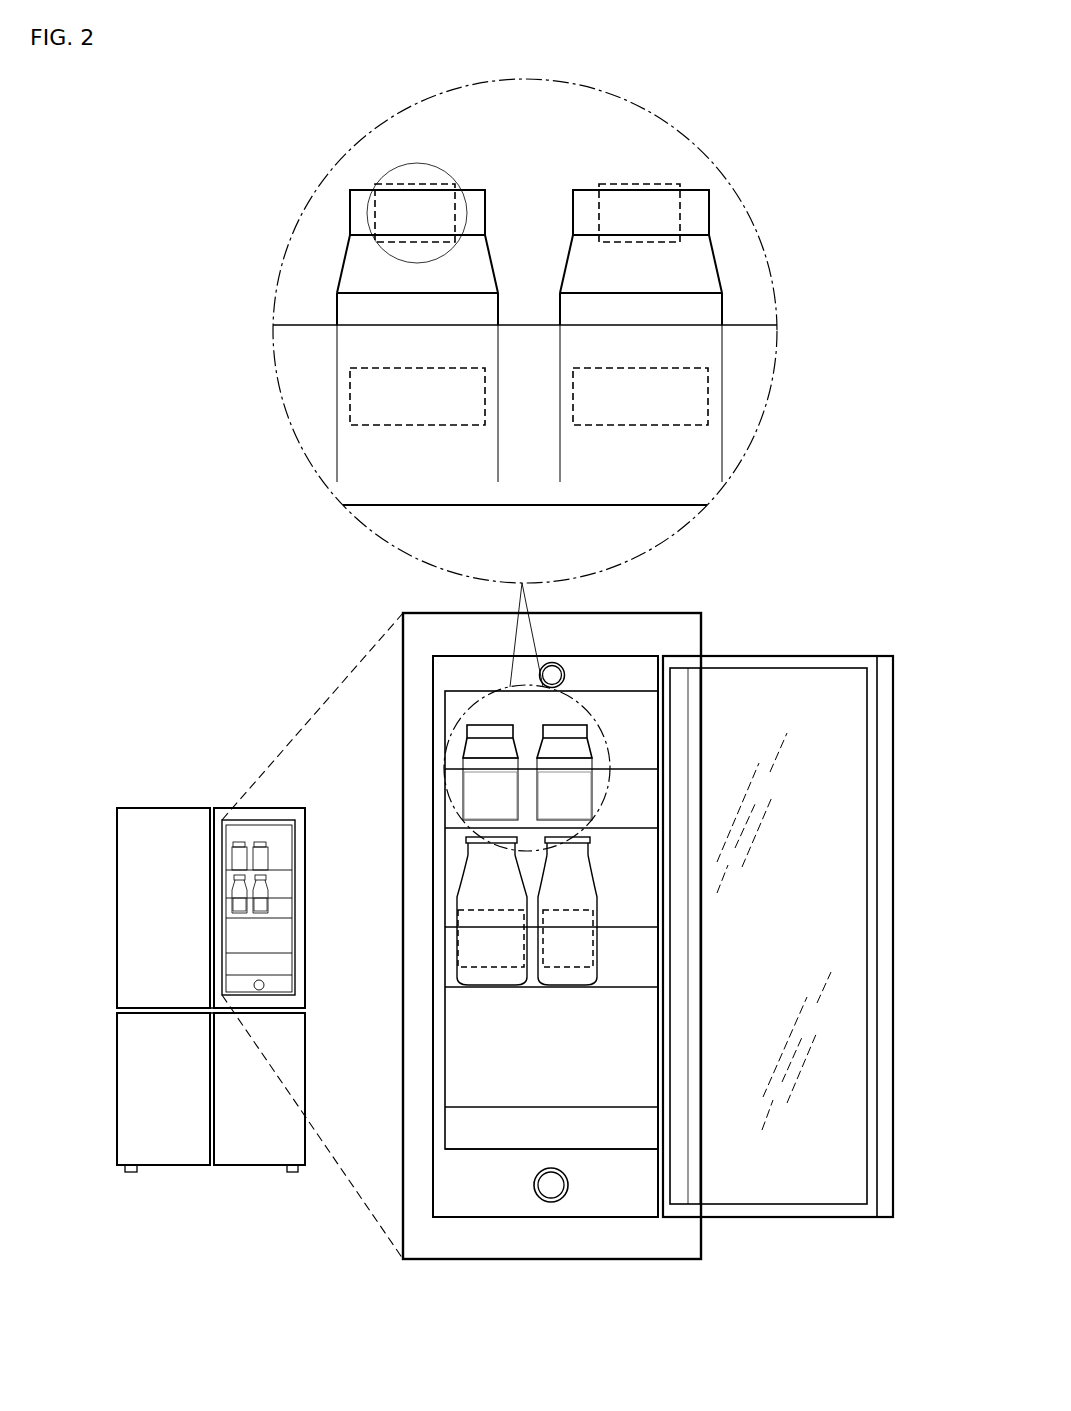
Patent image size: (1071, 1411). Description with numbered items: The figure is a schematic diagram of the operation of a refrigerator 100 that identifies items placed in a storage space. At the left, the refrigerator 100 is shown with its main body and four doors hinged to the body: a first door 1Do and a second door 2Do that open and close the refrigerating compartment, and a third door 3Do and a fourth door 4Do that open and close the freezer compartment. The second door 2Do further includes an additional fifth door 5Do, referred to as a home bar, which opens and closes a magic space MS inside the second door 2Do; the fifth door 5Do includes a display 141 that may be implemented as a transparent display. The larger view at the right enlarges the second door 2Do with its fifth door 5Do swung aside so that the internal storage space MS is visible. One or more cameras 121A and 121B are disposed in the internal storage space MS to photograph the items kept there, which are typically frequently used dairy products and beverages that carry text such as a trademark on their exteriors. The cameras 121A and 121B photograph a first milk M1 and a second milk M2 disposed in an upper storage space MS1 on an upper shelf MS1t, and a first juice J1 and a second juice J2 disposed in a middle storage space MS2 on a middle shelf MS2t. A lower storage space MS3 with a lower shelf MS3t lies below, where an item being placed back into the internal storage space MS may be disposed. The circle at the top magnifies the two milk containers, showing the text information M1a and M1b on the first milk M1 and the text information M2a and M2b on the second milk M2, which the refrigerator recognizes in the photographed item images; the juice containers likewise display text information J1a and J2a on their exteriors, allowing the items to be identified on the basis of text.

The refrigerator 100 is at (206, 766).
The first door 1Do is at (163, 806).
The second door 2Do is at (518, 1233).
The third door 3Do is at (165, 1152).
The fourth door 4Do is at (252, 1150).
The fifth door 5Do is at (884, 1205).
The display 141 is at (840, 1178).
The camera 121A is at (563, 667).
The camera 121B is at (570, 1188).
The magic space MS is at (455, 696).
The upper storage space MS1 is at (612, 708).
The upper shelf MS1t is at (642, 788).
The middle storage space MS2 is at (636, 887).
The middle shelf MS2t is at (636, 948).
The lower storage space MS3 is at (638, 1050).
The lower shelf MS3t is at (647, 1118).
The first milk M1 is at (337, 445).
The text information M1a is at (350, 396).
The text information M1b is at (417, 183).
The second milk M2 is at (722, 445).
The text information M2a is at (712, 396).
The text information M2b is at (640, 183).
The first juice J1 is at (460, 973).
The text information J1a is at (460, 947).
The second juice J2 is at (545, 868).
The text information J2a is at (573, 912).